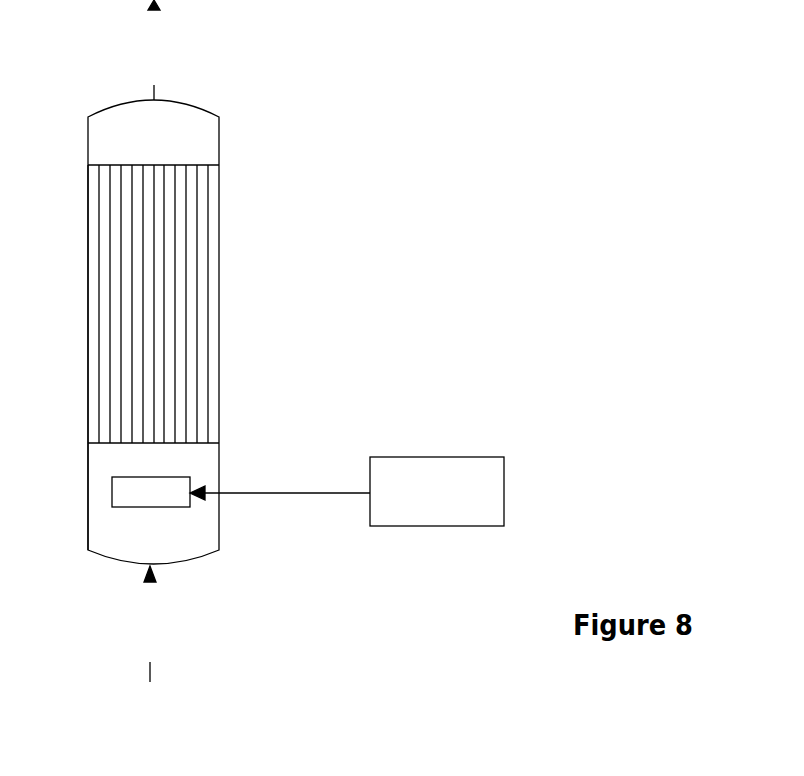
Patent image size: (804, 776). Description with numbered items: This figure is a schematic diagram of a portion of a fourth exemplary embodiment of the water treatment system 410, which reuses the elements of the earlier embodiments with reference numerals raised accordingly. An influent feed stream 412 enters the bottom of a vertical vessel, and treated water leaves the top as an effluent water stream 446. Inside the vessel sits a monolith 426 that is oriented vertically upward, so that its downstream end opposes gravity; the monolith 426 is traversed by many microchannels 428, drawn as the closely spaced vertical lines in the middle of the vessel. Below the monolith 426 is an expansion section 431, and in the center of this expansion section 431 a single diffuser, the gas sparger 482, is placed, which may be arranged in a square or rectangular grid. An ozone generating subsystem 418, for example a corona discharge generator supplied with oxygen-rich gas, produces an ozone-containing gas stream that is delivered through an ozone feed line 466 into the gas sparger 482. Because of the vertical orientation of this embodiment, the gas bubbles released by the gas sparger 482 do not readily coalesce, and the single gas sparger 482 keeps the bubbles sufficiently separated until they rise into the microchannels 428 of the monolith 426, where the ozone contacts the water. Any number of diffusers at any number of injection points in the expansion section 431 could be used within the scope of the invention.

The system 410 is at (264, 159).
The influent feed stream 412 is at (121, 622).
The ozone generating subsystem 418 is at (505, 476).
The monolith 426 is at (87, 312).
The microchannels 428 is at (211, 325).
The expansion section 431 is at (87, 511).
The effluent water stream 446 is at (116, 82).
The ozone feed line 466 is at (281, 494).
The gas sparger 482 is at (128, 476).